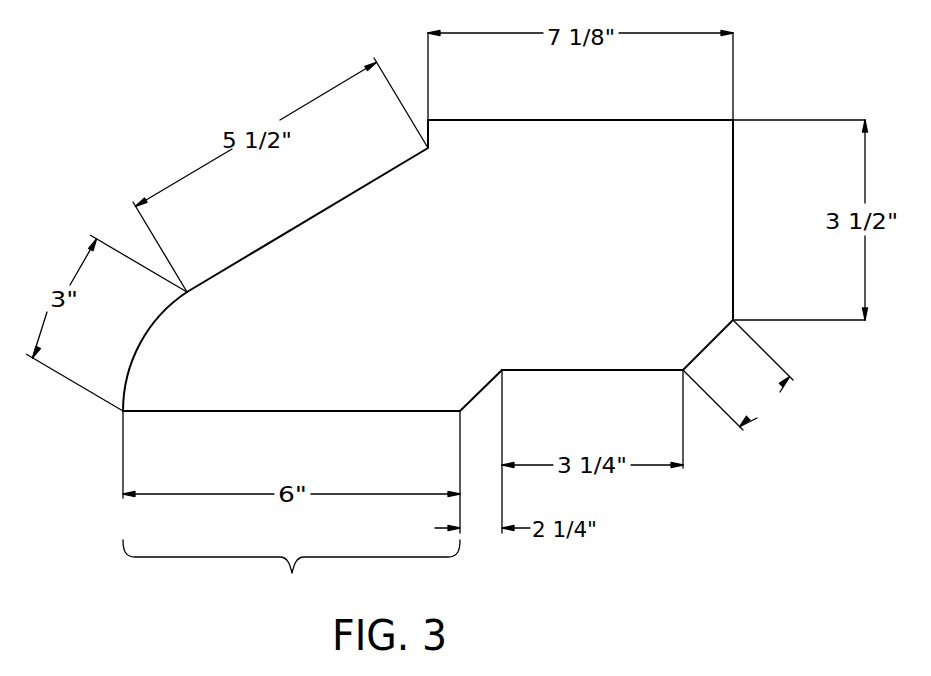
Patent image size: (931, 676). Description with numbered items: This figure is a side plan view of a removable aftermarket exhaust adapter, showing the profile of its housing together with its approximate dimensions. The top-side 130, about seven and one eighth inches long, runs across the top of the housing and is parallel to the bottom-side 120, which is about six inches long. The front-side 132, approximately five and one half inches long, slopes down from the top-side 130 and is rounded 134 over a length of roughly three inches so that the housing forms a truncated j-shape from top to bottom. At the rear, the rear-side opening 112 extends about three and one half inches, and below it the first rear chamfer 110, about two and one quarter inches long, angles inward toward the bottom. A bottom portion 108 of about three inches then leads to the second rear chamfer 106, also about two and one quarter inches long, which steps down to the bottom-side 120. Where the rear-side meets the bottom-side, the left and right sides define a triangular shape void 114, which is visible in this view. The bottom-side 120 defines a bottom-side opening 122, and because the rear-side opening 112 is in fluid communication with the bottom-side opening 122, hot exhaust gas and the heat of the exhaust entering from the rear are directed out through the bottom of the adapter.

The second rear chamfer 106 is at (480, 385).
The bottom portion 108 is at (580, 370).
The first rear chamfer 110 is at (708, 345).
The rear-side opening 112 is at (733, 233).
The triangular shape void 114 is at (813, 403).
The bottom-side 120 is at (190, 413).
The bottom-side opening 122 is at (291, 572).
The top-side 130 is at (493, 120).
The front-side 132 is at (297, 233).
The rounded front-side portion 134 is at (140, 348).